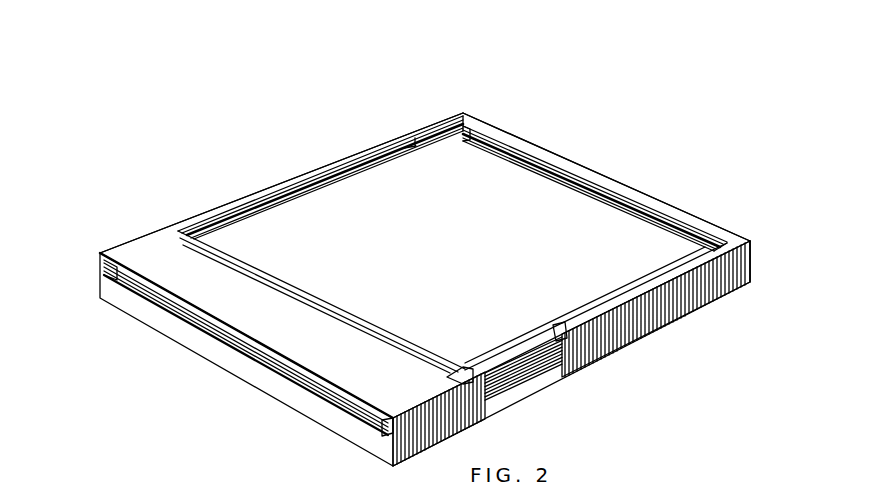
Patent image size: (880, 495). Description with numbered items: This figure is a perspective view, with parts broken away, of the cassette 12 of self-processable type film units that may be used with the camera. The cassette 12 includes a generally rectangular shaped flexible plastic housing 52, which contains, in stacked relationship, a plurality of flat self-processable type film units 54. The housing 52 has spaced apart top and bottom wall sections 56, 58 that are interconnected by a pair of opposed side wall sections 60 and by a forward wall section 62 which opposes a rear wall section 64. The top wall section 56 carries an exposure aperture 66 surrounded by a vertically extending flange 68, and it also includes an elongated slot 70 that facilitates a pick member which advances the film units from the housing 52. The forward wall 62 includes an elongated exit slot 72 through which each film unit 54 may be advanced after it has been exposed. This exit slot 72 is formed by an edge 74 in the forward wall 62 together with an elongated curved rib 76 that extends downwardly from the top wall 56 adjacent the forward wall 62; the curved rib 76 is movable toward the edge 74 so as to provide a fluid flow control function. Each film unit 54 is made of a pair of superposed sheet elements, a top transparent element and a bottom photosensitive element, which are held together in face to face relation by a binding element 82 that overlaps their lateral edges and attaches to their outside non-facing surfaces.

The cassette 12 is at (577, 161).
The housing 52 is at (652, 192).
The film unit 54 is at (518, 378).
The top wall section 56 is at (149, 246).
The bottom wall section 58 is at (665, 326).
The side wall section 60 is at (330, 163).
The forward wall section 62 is at (317, 412).
The rear wall section 64 is at (719, 233).
The exposure aperture 66 is at (398, 152).
The flange 68 is at (281, 190).
The elongated slot 70 is at (468, 122).
The exit slot 72 is at (109, 276).
The edge 74 is at (233, 338).
The curved rib 76 is at (200, 327).
The binding element 82 is at (519, 166).